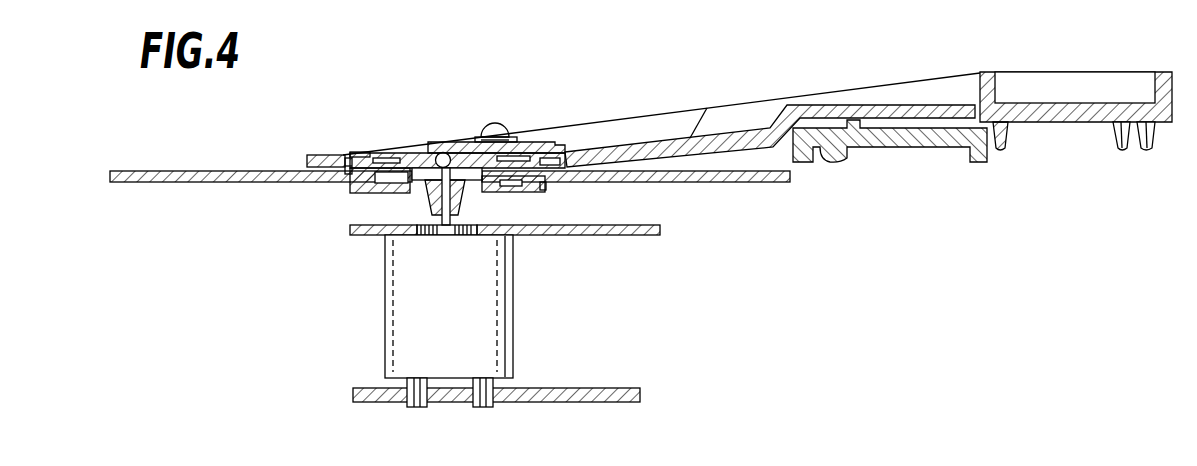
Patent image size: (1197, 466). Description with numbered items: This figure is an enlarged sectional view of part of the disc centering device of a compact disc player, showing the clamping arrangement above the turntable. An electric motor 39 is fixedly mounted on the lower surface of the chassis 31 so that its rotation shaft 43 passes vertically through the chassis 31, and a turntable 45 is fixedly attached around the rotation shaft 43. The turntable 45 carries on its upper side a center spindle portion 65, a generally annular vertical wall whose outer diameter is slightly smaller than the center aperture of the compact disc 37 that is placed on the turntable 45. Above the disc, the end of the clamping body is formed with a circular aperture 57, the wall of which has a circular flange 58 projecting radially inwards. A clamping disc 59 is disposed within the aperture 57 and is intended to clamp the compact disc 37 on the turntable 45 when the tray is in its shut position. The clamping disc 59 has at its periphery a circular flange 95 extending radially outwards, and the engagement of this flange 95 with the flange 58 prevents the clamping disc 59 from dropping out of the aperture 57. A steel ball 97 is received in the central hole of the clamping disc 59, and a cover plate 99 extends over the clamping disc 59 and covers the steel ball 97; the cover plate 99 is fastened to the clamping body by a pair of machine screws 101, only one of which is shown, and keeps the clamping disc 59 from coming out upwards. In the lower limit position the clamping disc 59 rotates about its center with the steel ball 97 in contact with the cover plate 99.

The chassis 31 is at (617, 236).
The information carrier disc 37 is at (183, 170).
The electric motor 39 is at (513, 307).
The rotation shaft 43 is at (466, 204).
The turntable 45 is at (398, 192).
The circular aperture 57 is at (342, 157).
The circular flange 58 is at (348, 174).
The clamping disc 59 is at (402, 156).
The center spindle portion 65 is at (510, 182).
The circular flange 95 is at (357, 152).
The steel ball 97 is at (445, 153).
The cover plate 99 is at (550, 141).
The machine screw 101 is at (500, 126).